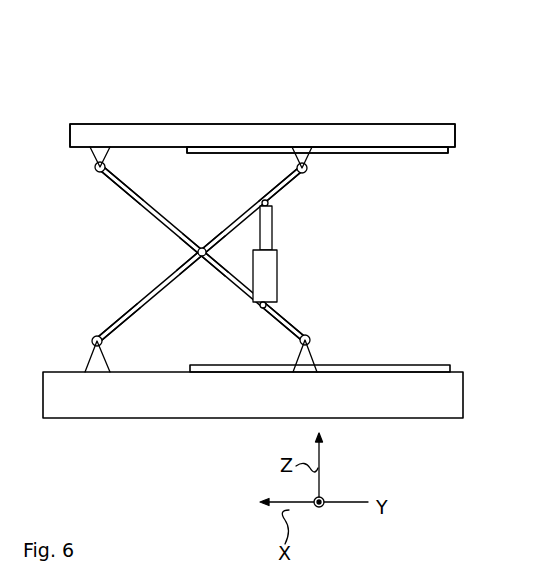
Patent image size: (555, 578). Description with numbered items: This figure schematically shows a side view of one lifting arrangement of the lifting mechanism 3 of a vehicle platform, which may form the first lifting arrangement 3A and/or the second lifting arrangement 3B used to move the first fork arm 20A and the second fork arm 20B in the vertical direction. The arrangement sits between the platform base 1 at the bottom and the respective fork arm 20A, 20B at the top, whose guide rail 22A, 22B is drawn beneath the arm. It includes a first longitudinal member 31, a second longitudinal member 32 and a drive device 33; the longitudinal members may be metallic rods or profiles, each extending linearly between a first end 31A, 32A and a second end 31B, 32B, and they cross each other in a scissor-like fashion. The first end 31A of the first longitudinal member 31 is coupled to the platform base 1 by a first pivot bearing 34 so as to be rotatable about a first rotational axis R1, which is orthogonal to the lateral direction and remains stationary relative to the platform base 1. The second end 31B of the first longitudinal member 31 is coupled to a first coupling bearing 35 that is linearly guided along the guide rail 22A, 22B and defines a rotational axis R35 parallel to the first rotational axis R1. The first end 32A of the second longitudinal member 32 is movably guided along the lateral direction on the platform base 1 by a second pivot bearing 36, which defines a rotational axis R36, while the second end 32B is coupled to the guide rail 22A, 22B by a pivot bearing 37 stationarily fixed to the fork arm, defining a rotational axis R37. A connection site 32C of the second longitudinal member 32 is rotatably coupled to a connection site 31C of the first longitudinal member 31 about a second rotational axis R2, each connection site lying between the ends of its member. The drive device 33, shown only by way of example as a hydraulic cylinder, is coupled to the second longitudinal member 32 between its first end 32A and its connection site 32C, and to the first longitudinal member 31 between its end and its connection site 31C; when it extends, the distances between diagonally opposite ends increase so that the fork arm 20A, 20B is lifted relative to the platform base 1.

The platform base 1 is at (465, 400).
The lifting mechanism 3 is at (232, 50).
The first lifting arrangement 3A is at (353, 61).
The second lifting arrangement 3B is at (414, 26).
The first fork arm 20A is at (450, 116).
The second fork arm 20B is at (304, 107).
The guide rail 22A is at (131, 131).
The guide rail 22B is at (267, 105).
The first longitudinal member 31 is at (123, 313).
The first end of the first longitudinal member 31A is at (100, 332).
The second end of the first longitudinal member 31B is at (307, 174).
The connection site of the first longitudinal member 31C is at (184, 251).
The second longitudinal member 32 is at (286, 310).
The first end of the second longitudinal member 32A is at (308, 332).
The second end of the second longitudinal member 32B is at (104, 178).
The connection site of the second longitudinal member 32C is at (204, 236).
The drive device 33 is at (278, 262).
The first pivot bearing 34 is at (98, 365).
The first coupling bearing 35 is at (305, 150).
The second pivot bearing 36 is at (307, 373).
The pivot bearing 37 is at (95, 153).
The first rotational axis R1 is at (91, 341).
The second rotational axis R2 is at (202, 260).
The rotational axis R35 is at (308, 168).
The rotational axis R36 is at (311, 340).
The rotational axis R37 is at (94, 167).